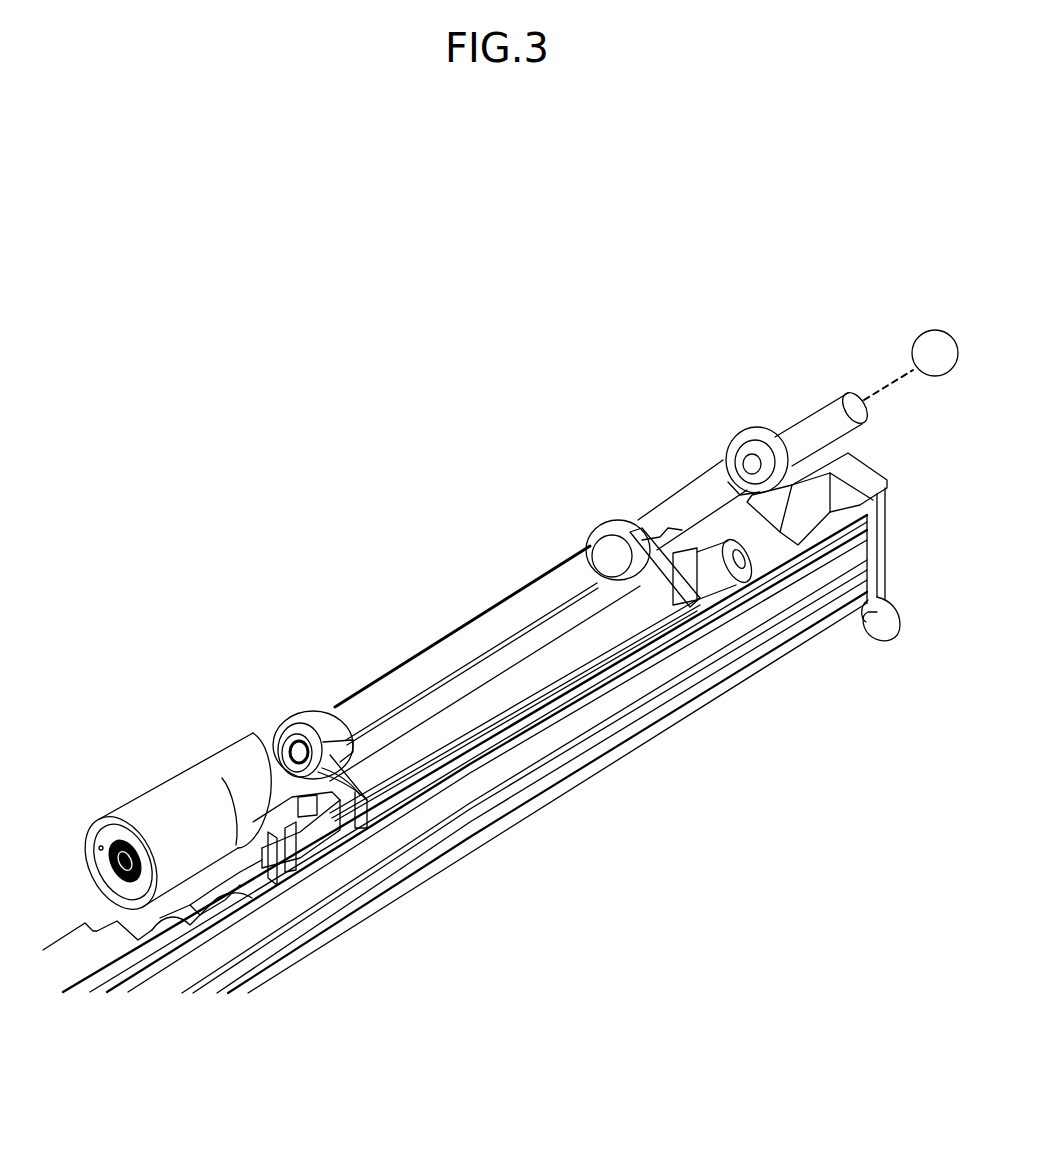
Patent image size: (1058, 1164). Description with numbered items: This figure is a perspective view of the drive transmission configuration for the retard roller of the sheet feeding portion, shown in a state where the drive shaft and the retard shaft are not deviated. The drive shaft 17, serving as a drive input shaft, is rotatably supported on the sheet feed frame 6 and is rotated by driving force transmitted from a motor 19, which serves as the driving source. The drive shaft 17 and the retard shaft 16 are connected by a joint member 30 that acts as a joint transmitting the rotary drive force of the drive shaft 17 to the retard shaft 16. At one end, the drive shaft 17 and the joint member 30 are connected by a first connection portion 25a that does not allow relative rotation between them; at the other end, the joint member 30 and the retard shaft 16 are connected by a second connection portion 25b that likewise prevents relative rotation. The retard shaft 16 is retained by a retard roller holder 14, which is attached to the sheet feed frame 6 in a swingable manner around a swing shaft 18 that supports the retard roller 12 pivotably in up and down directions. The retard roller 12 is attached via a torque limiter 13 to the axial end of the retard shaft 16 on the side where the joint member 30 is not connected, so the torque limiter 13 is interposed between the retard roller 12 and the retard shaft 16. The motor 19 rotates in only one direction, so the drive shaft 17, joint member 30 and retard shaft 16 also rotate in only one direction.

The sheet feed frame 6 is at (870, 462).
The retard roller 12 is at (147, 782).
The torque limiter 13 is at (248, 746).
The retard roller holder 14 is at (294, 708).
The retard shaft 16 is at (375, 688).
The drive shaft 17 is at (800, 413).
The swing shaft 18 is at (458, 745).
The motor 19 is at (937, 325).
The first connection portion 25a is at (718, 452).
The second connection portion 25b is at (624, 506).
The joint member 30 is at (678, 500).